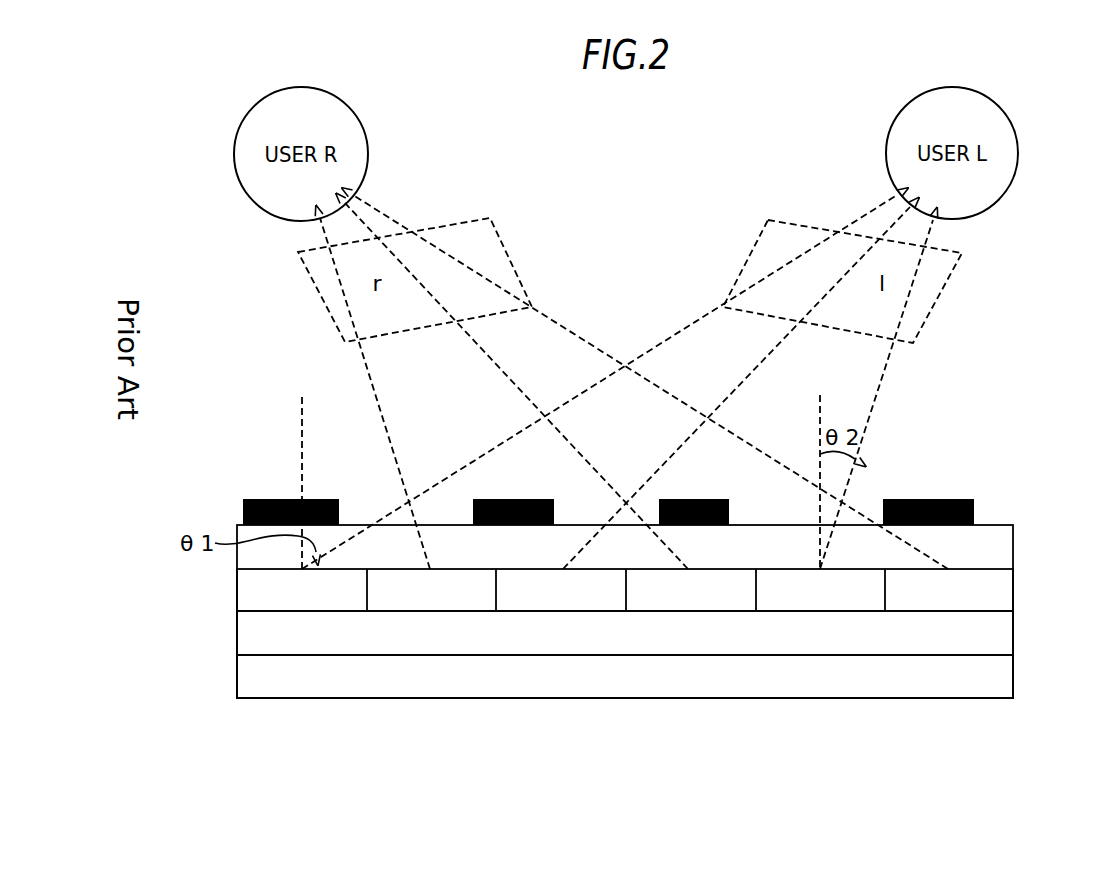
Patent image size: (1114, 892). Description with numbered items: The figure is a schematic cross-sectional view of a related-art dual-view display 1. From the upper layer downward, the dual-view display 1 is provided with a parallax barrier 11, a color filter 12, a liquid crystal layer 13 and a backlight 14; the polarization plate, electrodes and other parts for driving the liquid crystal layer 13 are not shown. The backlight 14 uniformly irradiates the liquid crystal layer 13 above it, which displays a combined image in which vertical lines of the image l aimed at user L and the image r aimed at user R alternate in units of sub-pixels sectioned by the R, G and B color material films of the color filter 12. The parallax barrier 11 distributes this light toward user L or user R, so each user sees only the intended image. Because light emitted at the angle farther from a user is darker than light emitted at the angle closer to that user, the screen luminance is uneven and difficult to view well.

The dual-view display 1 is at (618, 762).
The parallax barrier 11 is at (997, 512).
The color filter 12 is at (1013, 592).
The liquid crystal layer 13 is at (997, 636).
The backlight 14 is at (999, 680).